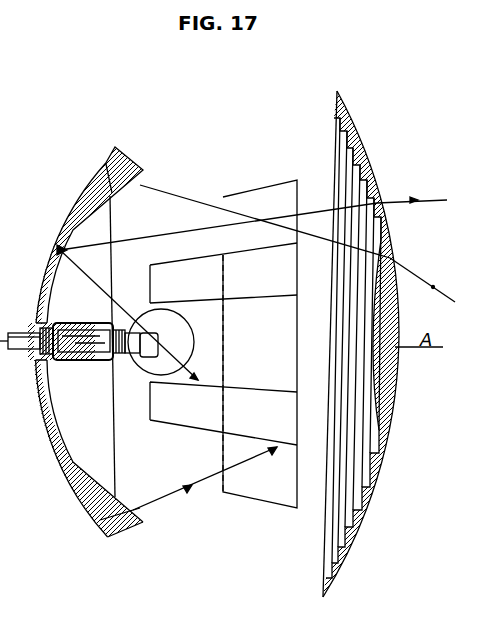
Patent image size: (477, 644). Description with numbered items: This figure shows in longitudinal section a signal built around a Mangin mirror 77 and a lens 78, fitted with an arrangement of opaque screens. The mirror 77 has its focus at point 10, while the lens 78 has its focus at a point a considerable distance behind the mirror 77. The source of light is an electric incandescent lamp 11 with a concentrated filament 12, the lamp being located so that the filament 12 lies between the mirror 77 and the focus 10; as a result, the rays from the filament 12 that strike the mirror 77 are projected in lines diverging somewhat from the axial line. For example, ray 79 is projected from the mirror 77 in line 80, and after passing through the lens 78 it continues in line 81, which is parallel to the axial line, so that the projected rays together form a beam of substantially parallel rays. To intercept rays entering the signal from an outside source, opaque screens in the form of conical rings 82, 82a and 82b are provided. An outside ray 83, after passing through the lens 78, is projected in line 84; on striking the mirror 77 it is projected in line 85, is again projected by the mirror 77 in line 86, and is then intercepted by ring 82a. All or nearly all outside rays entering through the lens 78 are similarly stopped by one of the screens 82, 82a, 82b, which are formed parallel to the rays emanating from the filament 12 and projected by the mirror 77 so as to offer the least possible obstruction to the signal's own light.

The focus 10 is at (178, 343).
The electric incandescent lamp 11 is at (138, 361).
The concentrated filament 12 is at (155, 344).
The Mangin mirror 77 is at (88, 186).
The lens 78 is at (388, 240).
The ray 79 is at (129, 315).
The line 80 is at (218, 226).
The line 81 is at (420, 195).
The conical ring 82 is at (280, 196).
The conical ring 82a is at (223, 268).
The conical ring 82b is at (223, 364).
The ray 83 is at (434, 287).
The line 84 is at (265, 221).
The line 85 is at (115, 437).
The line 86 is at (205, 479).